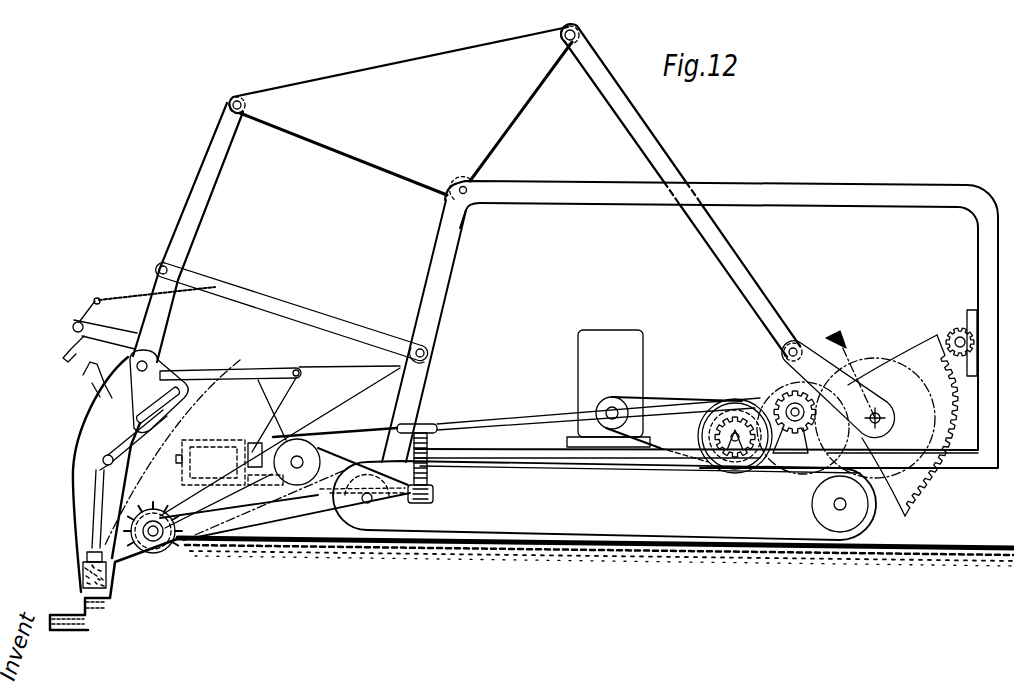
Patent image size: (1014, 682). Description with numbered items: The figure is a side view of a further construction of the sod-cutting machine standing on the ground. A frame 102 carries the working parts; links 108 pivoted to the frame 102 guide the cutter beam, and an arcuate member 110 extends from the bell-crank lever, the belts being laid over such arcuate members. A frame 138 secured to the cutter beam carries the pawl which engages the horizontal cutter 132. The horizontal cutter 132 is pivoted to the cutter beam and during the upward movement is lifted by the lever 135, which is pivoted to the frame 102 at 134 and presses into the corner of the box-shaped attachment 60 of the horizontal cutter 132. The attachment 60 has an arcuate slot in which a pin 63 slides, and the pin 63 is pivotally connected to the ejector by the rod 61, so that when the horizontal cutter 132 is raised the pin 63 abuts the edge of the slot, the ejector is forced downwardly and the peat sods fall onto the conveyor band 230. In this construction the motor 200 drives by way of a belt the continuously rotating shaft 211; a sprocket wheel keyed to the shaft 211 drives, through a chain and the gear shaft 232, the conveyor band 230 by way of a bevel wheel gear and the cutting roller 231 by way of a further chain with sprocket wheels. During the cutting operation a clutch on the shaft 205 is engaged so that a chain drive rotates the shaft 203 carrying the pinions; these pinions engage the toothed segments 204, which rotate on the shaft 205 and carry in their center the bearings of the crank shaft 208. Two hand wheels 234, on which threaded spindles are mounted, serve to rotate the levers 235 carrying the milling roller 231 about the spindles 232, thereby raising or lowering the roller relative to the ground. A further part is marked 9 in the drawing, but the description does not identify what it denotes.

The pivot 9 is at (426, 350).
The box-shaped attachment 60 is at (151, 380).
The rod 61 is at (127, 446).
The pin 63 is at (160, 410).
The frame 102 is at (447, 293).
The link 108 is at (278, 294).
The arcuate member 110 is at (464, 186).
The horizontal cutter 132 is at (84, 440).
The pivot 134 is at (297, 367).
The lever 135 is at (210, 372).
The frame 138 is at (174, 229).
The motor 200 is at (608, 336).
The shaft 203 is at (957, 326).
The toothed segment 204 is at (933, 485).
The shaft 205 is at (797, 404).
The crank shaft 208 is at (890, 418).
The continuously rotating shaft 211 is at (733, 415).
The conveyor band 230 is at (246, 441).
The cutting roller 231 is at (145, 565).
The gear shaft 232 is at (318, 458).
The hand wheel 234 is at (433, 424).
The lever 235 is at (294, 540).